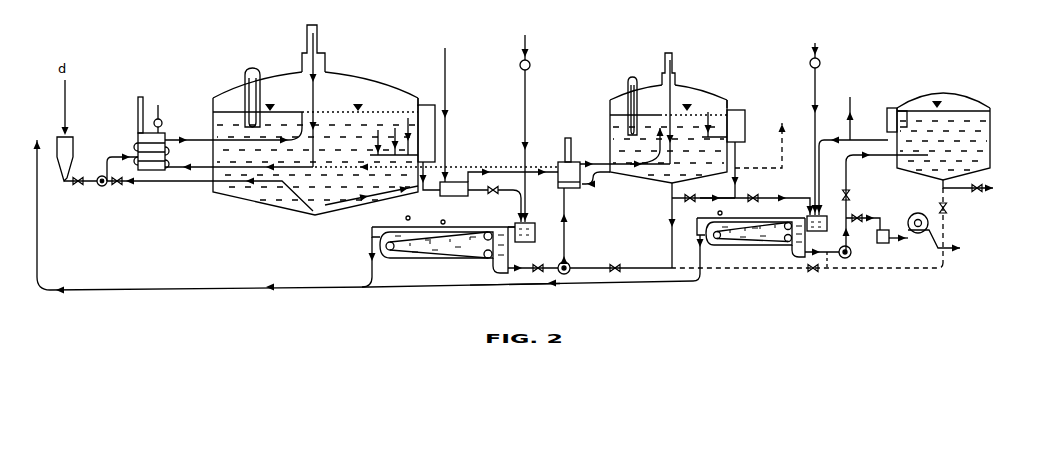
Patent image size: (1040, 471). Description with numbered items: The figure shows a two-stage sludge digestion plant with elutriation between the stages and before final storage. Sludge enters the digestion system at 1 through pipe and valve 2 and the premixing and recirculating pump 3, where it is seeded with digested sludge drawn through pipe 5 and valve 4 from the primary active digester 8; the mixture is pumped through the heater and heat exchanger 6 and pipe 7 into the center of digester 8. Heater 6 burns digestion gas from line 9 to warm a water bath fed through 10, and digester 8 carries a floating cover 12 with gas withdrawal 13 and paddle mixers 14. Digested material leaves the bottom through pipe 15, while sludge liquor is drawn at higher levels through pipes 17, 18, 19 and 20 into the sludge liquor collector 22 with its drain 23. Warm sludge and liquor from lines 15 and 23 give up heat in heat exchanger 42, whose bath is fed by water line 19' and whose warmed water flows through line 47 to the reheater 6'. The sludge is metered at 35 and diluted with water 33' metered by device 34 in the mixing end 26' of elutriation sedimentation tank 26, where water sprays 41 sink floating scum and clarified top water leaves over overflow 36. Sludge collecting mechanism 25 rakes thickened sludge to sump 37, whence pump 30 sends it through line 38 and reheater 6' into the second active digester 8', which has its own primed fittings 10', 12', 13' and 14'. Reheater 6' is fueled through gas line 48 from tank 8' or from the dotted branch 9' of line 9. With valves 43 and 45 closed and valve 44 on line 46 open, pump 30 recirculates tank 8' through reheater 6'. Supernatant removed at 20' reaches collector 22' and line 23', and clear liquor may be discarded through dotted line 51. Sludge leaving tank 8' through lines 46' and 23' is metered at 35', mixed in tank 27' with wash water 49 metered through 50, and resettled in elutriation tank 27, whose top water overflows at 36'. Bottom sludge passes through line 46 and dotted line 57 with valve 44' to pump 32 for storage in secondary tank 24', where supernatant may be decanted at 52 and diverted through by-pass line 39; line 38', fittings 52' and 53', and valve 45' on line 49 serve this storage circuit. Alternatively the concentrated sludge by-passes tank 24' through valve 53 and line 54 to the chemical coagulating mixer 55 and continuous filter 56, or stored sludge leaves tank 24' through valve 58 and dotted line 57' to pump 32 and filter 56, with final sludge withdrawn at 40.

The sludge inlet 1 is at (71, 156).
The pipe and valve 2 is at (80, 189).
The premixing and recirculating pump 3 is at (101, 188).
The valve 4 is at (123, 189).
The pipe 5 is at (226, 195).
The digester heater and heat exchanger 6 is at (138, 139).
The pipe 7 is at (233, 128).
The primary or active digester 8 is at (305, 148).
The digestion gas line 9 is at (239, 160).
The water feed 10 is at (157, 108).
The floating cover 12 is at (315, 76).
The gas withdrawal 13 is at (326, 95).
The paddle mixer 14 is at (268, 97).
The bottom withdrawal pipe 15 is at (379, 198).
The withdrawal pipe 17 is at (389, 142).
The withdrawal pipe 18 is at (388, 137).
The withdrawal pipe 19 is at (403, 133).
The withdrawal pipe 20 is at (408, 104).
The sludge liquor collector 22 is at (427, 123).
The drain 23 is at (432, 176).
The secondary storage tank 24' is at (958, 136).
The sludge collecting mechanism 25 is at (466, 262).
The elutriation sedimentation tank 26 is at (438, 257).
The mixing end 26' is at (535, 233).
The elutriation concentration tank 27 is at (749, 249).
The mixing tank 27' is at (819, 231).
The pump 30 is at (568, 263).
The pump 32 is at (836, 252).
The water fraction line 33' is at (522, 45).
The water meter 34 is at (513, 141).
The sludge metering device 35 is at (496, 205).
The metering device 35' is at (774, 198).
The overflow 36 is at (352, 219).
The overflow 36' is at (531, 292).
The sedimentation tank sump 37 is at (512, 282).
The pipe 38 is at (574, 226).
The line 38' is at (886, 202).
The by-pass line 39 is at (850, 110).
The final sludge withdrawal 40 is at (972, 195).
The flat-sheet water sprays 41 is at (447, 222).
The heat exchanger 42 is at (454, 197).
The valve 43 is at (533, 259).
The valve 44 is at (621, 259).
The valve 44' is at (816, 270).
The valve 45 is at (703, 206).
The valve 45' is at (966, 196).
The line 46 is at (659, 225).
The line 46' is at (717, 189).
The warm water line 47 is at (507, 167).
The gas line 48 is at (601, 184).
The wash water line 49 is at (814, 122).
The meter 50 is at (826, 63).
The discard line 51 is at (770, 145).
The supernatant decant point 52 is at (902, 107).
The line 52' is at (852, 169).
The valve 53 is at (863, 226).
The valve 53' is at (860, 199).
The line 54 is at (883, 226).
The chemical coagulating mixer 55 is at (891, 245).
The continuous filter 56 is at (934, 237).
The dotted line 57 is at (807, 276).
The dotted line 57' is at (956, 225).
The valve 58 is at (932, 205).
The reheater 6' is at (565, 163).
The second active digester 8' is at (657, 136).
The dotted branch gas line 9' is at (436, 158).
The line 10' is at (457, 110).
The tank cover 12' is at (668, 85).
The central pipe 13' is at (682, 106).
The probe 14' is at (632, 95).
The water line 19' is at (705, 124).
The supernatant withdrawal 20' is at (711, 102).
The collector 22' is at (747, 120).
The line 23' is at (747, 170).